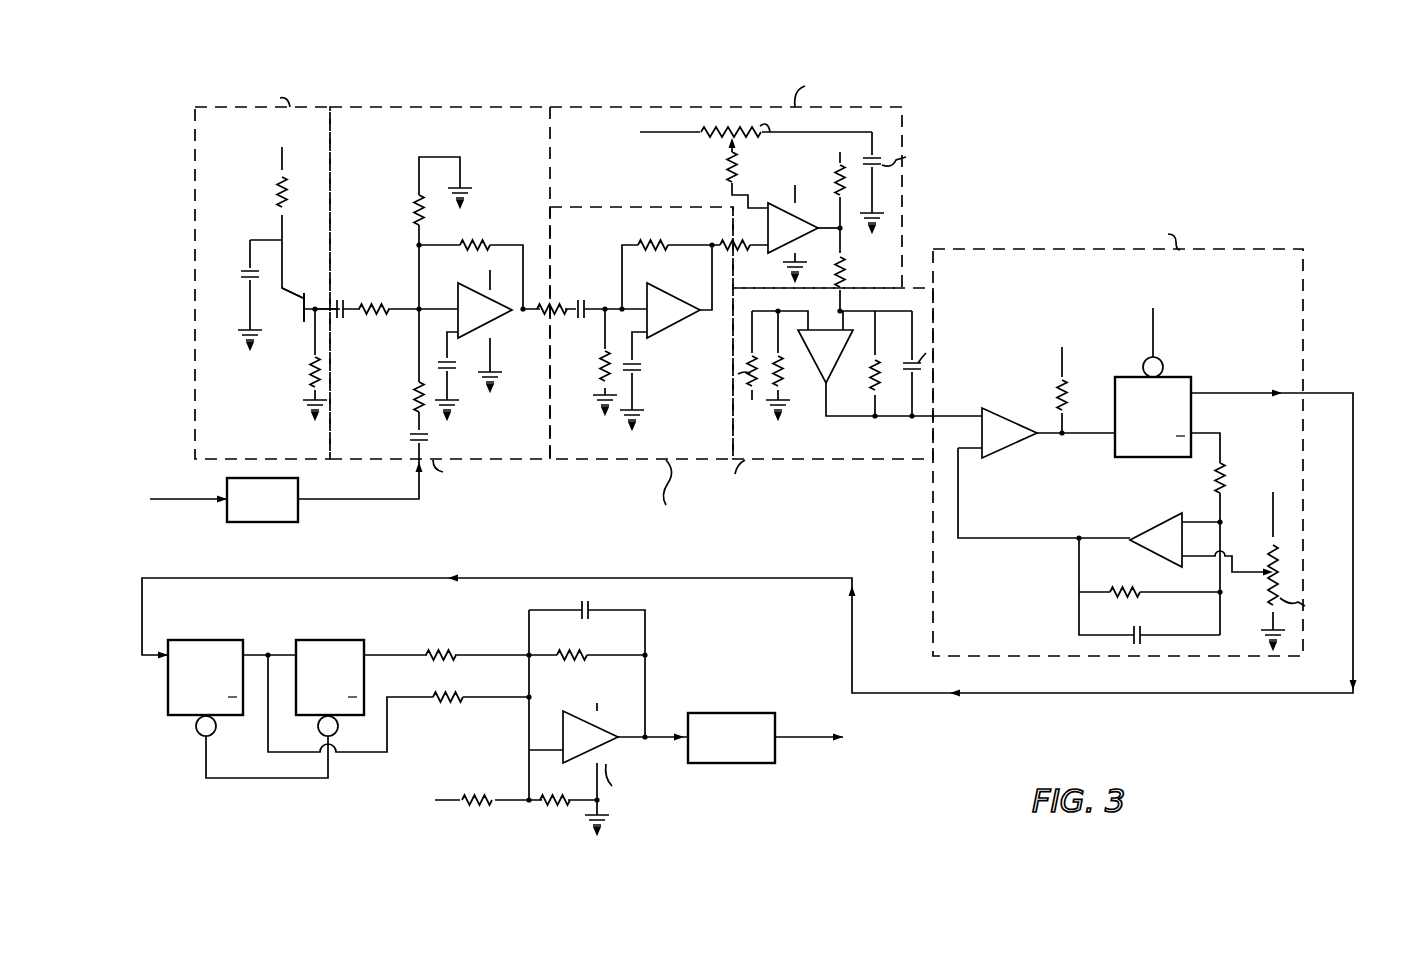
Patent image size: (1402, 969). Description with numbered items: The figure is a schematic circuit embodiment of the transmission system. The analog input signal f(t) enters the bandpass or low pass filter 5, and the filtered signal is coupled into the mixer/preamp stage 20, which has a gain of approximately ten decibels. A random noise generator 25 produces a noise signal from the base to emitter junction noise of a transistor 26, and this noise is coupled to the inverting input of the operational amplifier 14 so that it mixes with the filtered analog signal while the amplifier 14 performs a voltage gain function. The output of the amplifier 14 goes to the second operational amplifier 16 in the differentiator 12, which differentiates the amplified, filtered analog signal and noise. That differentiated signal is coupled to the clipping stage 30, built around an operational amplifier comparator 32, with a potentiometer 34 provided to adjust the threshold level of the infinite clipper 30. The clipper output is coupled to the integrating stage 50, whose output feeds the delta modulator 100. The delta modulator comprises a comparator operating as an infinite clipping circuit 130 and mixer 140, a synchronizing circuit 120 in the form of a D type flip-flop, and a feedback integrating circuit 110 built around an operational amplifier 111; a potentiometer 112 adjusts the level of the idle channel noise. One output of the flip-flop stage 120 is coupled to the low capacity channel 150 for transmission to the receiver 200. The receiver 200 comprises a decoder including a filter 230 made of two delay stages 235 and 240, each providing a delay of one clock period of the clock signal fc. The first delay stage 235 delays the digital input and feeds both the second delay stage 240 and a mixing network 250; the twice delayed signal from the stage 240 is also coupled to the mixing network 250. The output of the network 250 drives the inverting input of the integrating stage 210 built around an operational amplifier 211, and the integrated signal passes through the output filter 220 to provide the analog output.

The bandpass or low pass filter 5 is at (300, 520).
The differentiator 12 is at (668, 367).
The operational amplifier 14 is at (498, 290).
The second operational amplifier 16 is at (680, 290).
The mixer/preamp stage 20 is at (450, 276).
The random noise generator 25 is at (195, 292).
The transistor 26 is at (284, 288).
The clipping stage 30 is at (755, 189).
The operational amplifier comparator 32 is at (807, 224).
The potentiometer 34 is at (732, 130).
The integrating stage 50 is at (876, 460).
The delta modulator 100 is at (759, 475).
The feedback integrating circuit 110 is at (1054, 584).
The operational amplifier 111 is at (1152, 526).
The potentiometer 112 is at (1280, 556).
The synchronizing circuit 120 is at (1180, 377).
The infinite clipping circuit 130 is at (1044, 473).
The mixer 140 is at (990, 456).
The low capacity channel 150 is at (1076, 694).
The receiver 200 is at (500, 719).
The integrating stage 210 is at (572, 712).
The operational amplifier 211 is at (569, 722).
The output band-pass/low-pass filter 220 is at (762, 713).
The filter 230 is at (254, 711).
The first delay stage 235 is at (210, 640).
The second delay stage 240 is at (323, 640).
The mixing network 250 is at (448, 610).